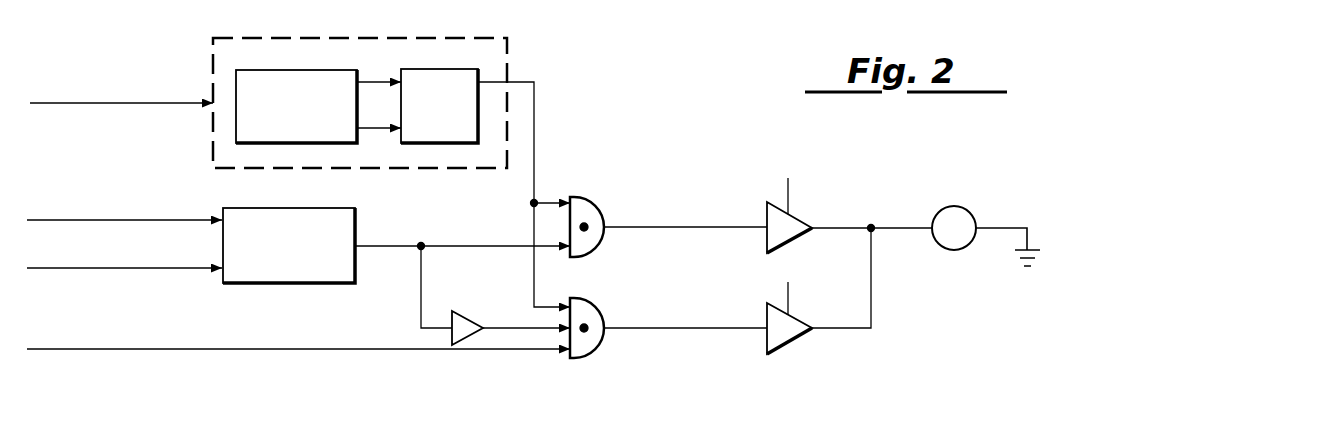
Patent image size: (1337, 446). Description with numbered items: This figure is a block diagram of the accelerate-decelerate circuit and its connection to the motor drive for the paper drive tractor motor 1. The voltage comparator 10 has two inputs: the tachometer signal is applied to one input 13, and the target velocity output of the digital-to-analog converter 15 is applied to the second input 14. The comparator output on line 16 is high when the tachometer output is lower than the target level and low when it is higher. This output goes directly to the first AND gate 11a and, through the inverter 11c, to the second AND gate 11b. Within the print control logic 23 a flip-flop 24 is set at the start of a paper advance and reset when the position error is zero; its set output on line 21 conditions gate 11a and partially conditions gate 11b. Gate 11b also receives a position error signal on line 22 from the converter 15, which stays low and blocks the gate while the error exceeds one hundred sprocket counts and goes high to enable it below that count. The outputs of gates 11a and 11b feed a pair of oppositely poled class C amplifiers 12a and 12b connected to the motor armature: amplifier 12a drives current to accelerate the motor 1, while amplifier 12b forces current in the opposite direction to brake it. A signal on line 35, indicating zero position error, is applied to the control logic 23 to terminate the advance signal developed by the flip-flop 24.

The tractor motor 1 is at (973, 212).
The voltage comparator 10 is at (315, 208).
The AND gate 11a is at (578, 197).
The AND gate 11b is at (583, 299).
The inverter 11c is at (457, 311).
The class C amplifier 12a is at (802, 215).
The class C amplifier 12b is at (802, 318).
The comparator input 13 is at (182, 219).
The comparator input 14 is at (182, 268).
The digital-to-analog converter 15 is at (71, 351).
The comparator output line 16 is at (507, 244).
The advance signal line 21 is at (537, 102).
The position error signal line 22 is at (513, 351).
The print control logic 23 is at (370, 37).
The flip-flop 24 is at (447, 69).
The decoder output line 35 is at (80, 104).